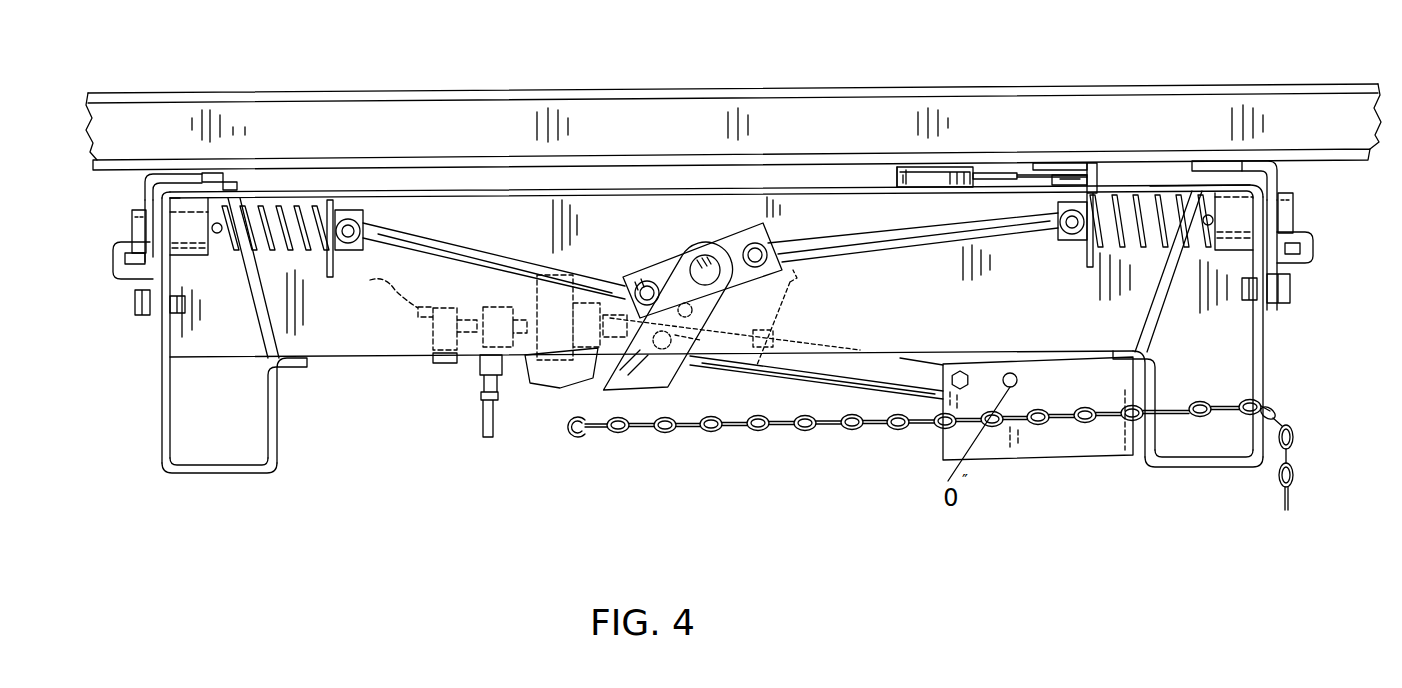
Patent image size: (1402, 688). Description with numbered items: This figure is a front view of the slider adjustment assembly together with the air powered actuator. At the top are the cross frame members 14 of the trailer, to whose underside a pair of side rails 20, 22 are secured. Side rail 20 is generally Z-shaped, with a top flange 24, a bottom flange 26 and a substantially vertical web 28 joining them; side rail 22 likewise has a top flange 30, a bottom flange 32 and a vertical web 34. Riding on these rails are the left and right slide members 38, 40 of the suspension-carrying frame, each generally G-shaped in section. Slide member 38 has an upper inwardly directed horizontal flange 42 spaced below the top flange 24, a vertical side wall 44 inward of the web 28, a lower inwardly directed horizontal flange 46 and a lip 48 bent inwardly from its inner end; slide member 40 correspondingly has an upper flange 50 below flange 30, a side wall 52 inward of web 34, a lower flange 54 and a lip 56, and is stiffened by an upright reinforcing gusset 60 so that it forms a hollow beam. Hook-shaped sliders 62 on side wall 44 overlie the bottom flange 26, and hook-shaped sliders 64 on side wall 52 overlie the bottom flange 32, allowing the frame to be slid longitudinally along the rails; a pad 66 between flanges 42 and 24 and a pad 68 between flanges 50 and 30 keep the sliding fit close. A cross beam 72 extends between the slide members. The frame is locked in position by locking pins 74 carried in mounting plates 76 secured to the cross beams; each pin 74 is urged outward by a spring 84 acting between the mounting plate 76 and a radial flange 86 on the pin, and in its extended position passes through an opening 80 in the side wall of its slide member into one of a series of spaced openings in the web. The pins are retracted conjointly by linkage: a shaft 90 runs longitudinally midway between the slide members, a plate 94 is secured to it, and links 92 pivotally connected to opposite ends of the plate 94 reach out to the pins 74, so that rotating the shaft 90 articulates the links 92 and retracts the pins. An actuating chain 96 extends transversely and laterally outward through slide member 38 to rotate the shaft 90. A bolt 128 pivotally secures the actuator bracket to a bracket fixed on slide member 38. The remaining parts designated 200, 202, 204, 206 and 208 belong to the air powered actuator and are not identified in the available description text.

The cross frame members 14 is at (448, 125).
The side rail 20 is at (1303, 181).
The side rail 22 is at (124, 193).
The top flange 24 is at (1230, 165).
The bottom flange 26 is at (1290, 244).
The web 28 is at (1276, 216).
The top flange 30 is at (204, 175).
The bottom flange 32 is at (147, 258).
The web 34 is at (152, 225).
The left slide member 38 is at (1157, 292).
The right slide member 40 is at (214, 377).
The upper horizontal flange 42 is at (1183, 188).
The side wall 44 is at (1144, 363).
The lower horizontal flange 46 is at (1195, 462).
The lip 48 is at (1127, 352).
The upper horizontal flange 50 is at (238, 185).
The side wall 52 is at (165, 342).
The lower horizontal flange 54 is at (217, 473).
The lip 56 is at (293, 370).
The reinforcing gusset 60 is at (265, 310).
The hook-shaped sliders 62 is at (1307, 264).
The hook-shaped sliders 64 is at (138, 280).
The pad 66 is at (1233, 175).
The pad 68 is at (182, 178).
The cross beam 72 is at (607, 240).
The locking pins 74 is at (1065, 242).
The mounting plates 76 is at (1093, 197).
The opening 80 is at (1260, 237).
The spring 84 is at (1140, 197).
The radial flange 86 is at (200, 255).
The shaft 90 is at (718, 272).
The links 92 is at (942, 236).
The plate 94 is at (729, 242).
The actuating chain 96 is at (1298, 450).
The bolt 128 is at (956, 386).
The cylinder 200 is at (974, 132).
The cylinder mounting plate 202 is at (1057, 165).
The cylinder mounting clip 204 is at (1100, 167).
The cylinder body 206 is at (895, 163).
The cylinder rod 208 is at (1008, 181).